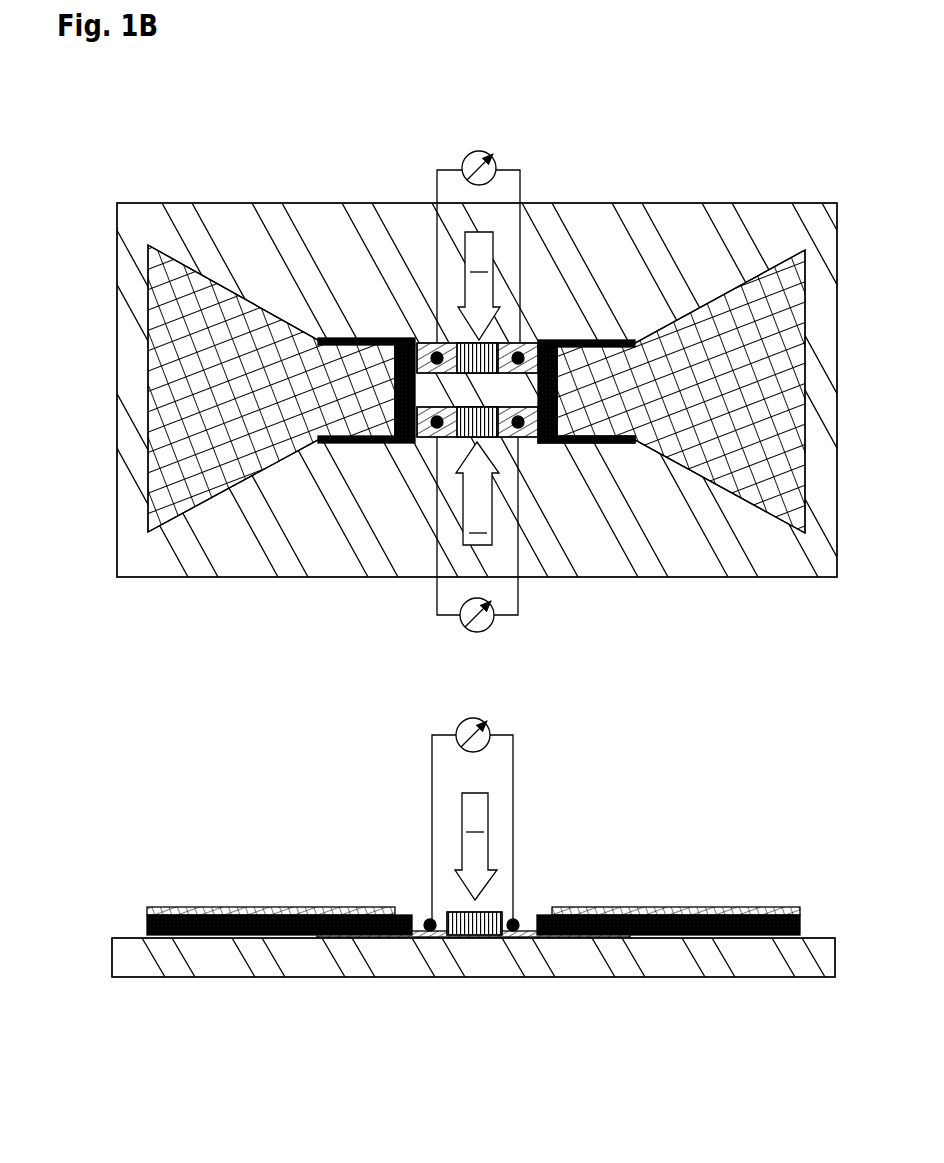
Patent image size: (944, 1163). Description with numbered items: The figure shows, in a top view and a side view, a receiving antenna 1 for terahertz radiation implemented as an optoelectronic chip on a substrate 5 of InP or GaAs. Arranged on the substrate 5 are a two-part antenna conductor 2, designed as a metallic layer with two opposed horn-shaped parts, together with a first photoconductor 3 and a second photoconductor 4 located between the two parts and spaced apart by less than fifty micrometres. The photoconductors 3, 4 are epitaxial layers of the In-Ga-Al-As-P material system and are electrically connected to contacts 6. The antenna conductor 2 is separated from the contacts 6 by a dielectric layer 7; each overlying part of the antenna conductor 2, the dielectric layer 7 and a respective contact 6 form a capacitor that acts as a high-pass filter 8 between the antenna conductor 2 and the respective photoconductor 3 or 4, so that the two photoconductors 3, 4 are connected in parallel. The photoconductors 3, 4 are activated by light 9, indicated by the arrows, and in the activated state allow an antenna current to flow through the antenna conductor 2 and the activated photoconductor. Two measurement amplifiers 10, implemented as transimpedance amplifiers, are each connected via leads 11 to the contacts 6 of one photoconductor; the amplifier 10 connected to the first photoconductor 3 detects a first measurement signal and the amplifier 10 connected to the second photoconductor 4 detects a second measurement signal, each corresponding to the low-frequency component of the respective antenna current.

The receiving antenna 1 is at (158, 165).
The two-part antenna conductor 2 is at (672, 348).
The first photoconductor 3 is at (464, 340).
The second photoconductor 4 is at (470, 440).
The substrate 5 is at (755, 230).
The electrical contacts 6 is at (523, 342).
The dielectric layer 7 is at (542, 338).
The high-pass filter 8 is at (548, 458).
The light 9 is at (477, 566).
The measurement amplifier 10 is at (478, 151).
The leads 11 is at (436, 617).